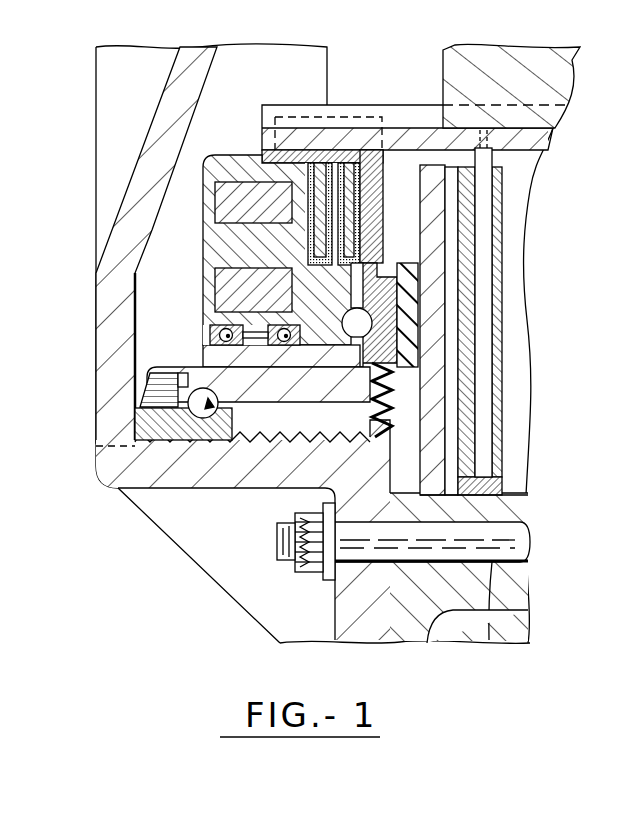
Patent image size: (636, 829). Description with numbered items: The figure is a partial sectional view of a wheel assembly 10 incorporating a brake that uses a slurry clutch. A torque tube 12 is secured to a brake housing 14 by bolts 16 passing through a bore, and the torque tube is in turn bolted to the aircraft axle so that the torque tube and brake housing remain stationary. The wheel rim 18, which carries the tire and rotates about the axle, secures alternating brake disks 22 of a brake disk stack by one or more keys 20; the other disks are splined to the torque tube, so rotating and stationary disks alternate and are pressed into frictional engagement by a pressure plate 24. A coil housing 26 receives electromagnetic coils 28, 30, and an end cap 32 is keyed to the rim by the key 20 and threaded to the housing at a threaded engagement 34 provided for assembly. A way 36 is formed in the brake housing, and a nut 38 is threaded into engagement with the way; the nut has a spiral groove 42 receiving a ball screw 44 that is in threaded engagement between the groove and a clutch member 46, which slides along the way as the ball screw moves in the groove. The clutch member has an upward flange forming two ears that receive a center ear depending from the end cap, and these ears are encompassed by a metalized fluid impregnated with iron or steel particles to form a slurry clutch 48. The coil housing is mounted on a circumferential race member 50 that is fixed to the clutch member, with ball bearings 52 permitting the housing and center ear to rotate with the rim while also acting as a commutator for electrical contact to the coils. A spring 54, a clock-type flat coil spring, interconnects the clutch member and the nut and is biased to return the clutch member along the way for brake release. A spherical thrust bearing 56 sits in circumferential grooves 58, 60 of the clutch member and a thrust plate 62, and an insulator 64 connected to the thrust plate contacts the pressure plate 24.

The wheel assembly 10 is at (116, 536).
The torque tube 12 is at (527, 600).
The brake housing 14 is at (217, 583).
The bolts 16 is at (490, 600).
The wheel rim 18 is at (450, 62).
The key 20 is at (414, 105).
The brake disks 22 is at (487, 180).
The pressure plate 24 is at (437, 172).
The coil housing 26 is at (203, 245).
The electromagnetic coil 28 is at (215, 207).
The electromagnetic coil 30 is at (215, 295).
The end cap 32 is at (383, 160).
The threaded engagement 34 is at (262, 157).
The way 36 is at (265, 450).
The nut 38 is at (135, 424).
The spiral groove 42 is at (96, 447).
The ball screw 44 is at (203, 418).
The clutch member 46 is at (310, 402).
The slurry clutch 48 is at (290, 237).
The race member 50 is at (203, 354).
The ball bearings 52 is at (210, 334).
The spring 54 is at (140, 385).
The spherical thrust bearing 56 is at (357, 300).
The circumferential groove 58 is at (349, 342).
The circumferential groove 60 is at (378, 277).
The thrust plate 62 is at (370, 370).
The insulator 64 is at (420, 310).